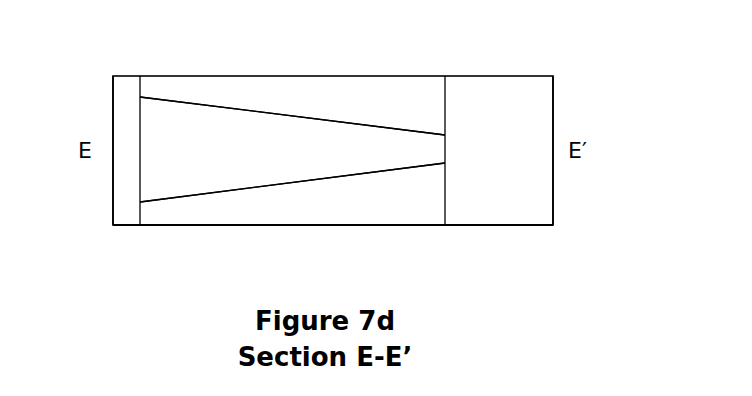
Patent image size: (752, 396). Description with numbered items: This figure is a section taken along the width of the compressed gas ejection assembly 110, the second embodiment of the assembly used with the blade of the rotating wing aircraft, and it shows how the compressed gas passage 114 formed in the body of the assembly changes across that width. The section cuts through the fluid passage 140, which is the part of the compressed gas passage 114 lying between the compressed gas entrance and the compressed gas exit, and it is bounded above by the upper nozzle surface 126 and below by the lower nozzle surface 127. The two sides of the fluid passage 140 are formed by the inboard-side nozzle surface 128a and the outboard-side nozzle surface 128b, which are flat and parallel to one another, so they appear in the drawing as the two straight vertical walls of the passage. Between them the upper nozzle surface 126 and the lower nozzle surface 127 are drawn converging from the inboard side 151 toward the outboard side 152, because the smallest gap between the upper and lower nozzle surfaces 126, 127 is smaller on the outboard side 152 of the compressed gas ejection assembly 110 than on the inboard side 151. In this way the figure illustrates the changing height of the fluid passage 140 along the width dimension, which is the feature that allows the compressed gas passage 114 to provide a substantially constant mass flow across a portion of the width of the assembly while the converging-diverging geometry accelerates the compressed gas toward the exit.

The compressed gas ejection assembly 110 is at (507, 77).
The compressed gas passage 114 is at (292, 106).
The fluid passage 140 is at (298, 142).
The upper nozzle surface 126 is at (225, 97).
The lower nozzle surface 127 is at (167, 208).
The inboard-side nozzle surface 128a is at (139, 126).
The outboard-side nozzle surface 128b is at (447, 146).
The inboard side 151 is at (113, 225).
The outboard side 152 is at (553, 225).